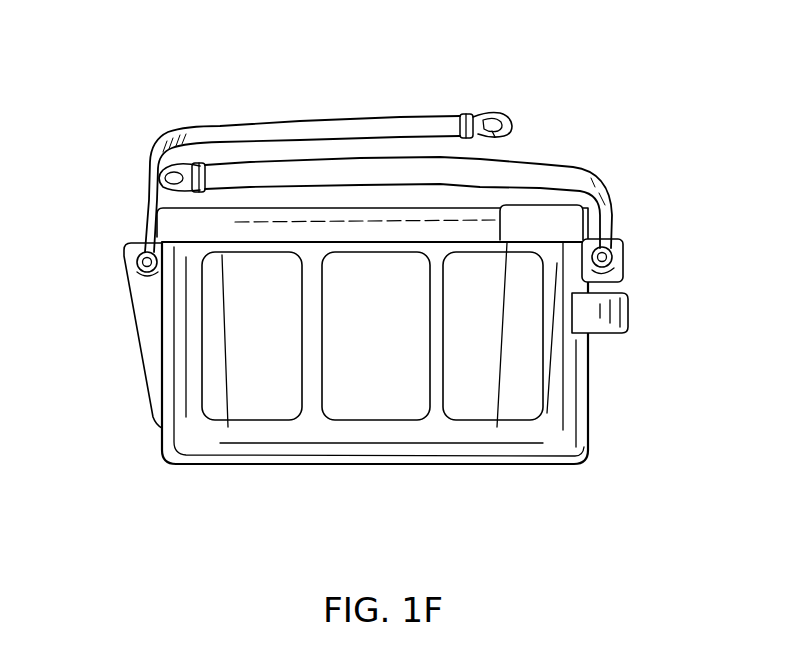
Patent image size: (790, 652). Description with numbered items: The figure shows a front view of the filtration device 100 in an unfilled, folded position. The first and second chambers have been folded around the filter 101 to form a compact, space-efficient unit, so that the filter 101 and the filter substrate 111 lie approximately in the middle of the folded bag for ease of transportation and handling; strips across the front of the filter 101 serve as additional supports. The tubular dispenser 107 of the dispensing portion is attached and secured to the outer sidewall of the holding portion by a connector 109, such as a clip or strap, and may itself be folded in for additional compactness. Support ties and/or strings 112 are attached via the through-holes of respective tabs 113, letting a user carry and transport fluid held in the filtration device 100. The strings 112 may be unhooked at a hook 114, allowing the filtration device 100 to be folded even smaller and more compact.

The filtration device 100 is at (112, 104).
The filter 101 is at (467, 430).
The tubular dispenser 107 is at (580, 220).
The connector 109 is at (628, 320).
The filter substrate 111 is at (337, 405).
The support ties and/or strings 112 is at (592, 178).
The tabs 113 is at (622, 258).
The hook 114 is at (505, 117).